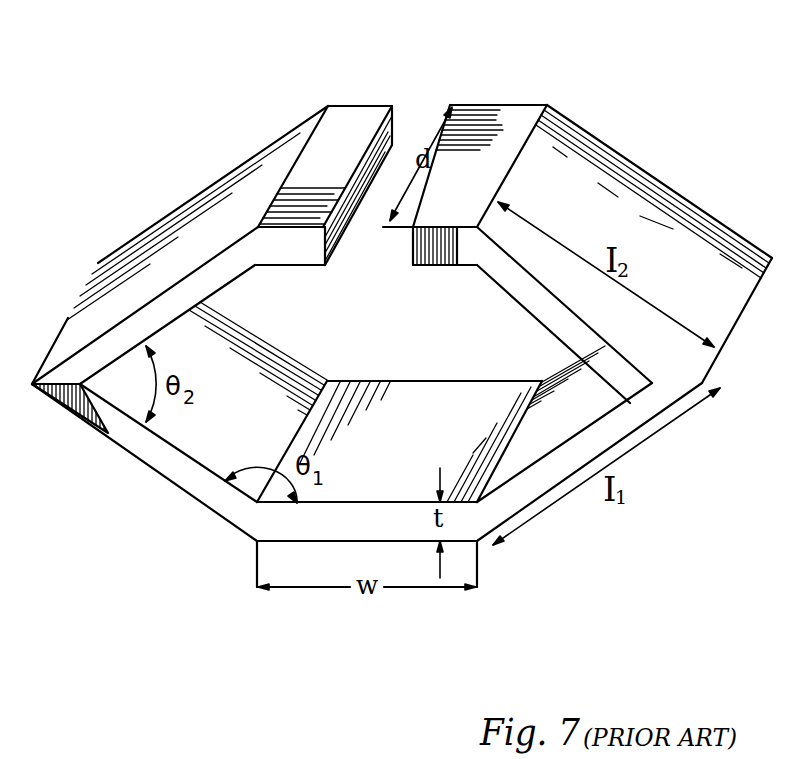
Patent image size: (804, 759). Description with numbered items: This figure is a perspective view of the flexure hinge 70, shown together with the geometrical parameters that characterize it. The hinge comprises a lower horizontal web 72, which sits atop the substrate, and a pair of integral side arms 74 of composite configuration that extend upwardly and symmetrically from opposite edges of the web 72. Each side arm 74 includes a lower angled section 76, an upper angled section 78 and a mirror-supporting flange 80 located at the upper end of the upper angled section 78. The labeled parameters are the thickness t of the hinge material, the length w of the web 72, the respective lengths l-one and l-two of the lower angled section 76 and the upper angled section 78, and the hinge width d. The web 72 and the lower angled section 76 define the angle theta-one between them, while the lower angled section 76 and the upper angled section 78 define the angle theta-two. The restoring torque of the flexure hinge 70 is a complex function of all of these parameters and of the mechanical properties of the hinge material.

The flexure hinge 70 is at (654, 128).
The lower horizontal web 72 is at (380, 467).
The side arm 74 is at (68, 318).
The lower angled section 76 is at (205, 423).
The upper angled section 78 is at (197, 223).
The mirror-supporting flange 80 is at (325, 158).